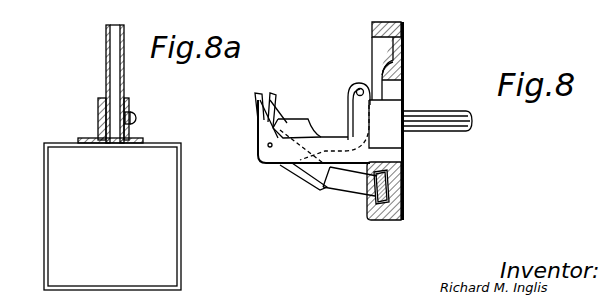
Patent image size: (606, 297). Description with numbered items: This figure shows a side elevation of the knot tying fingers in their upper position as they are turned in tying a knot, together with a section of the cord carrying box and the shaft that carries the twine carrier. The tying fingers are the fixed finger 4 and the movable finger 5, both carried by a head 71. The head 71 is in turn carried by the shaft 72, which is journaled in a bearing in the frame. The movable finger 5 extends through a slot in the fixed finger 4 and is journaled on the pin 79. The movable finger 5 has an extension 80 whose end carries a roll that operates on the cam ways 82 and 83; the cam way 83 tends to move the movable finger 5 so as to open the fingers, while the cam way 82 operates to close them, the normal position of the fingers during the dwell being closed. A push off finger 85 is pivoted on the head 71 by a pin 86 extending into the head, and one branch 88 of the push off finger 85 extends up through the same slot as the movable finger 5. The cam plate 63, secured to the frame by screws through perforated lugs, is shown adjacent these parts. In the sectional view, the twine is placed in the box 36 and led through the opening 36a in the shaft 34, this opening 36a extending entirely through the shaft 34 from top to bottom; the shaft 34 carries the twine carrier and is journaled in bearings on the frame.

In FIG. 8, the fixed finger 4 is at (257, 111).
In FIG. 8, the movable finger 5 is at (275, 105).
In FIG. 8A, the shaft 34 is at (125, 91).
In FIG. 8A, the box 36 is at (112, 216).
In FIG. 8A, the opening 36a is at (113, 70).
In FIG. 8, the cam plate 63 is at (403, 175).
In FIG. 8, the head 71 is at (385, 124).
In FIG. 8, the shaft 72 is at (457, 118).
In FIG. 8, the pin 79 is at (263, 148).
In FIG. 8, the extension 80 is at (353, 180).
In FIG. 8, the cam way 82 is at (372, 23).
In FIG. 8, the cam way 83 is at (402, 61).
In FIG. 8, the push off finger 85 is at (275, 114).
In FIG. 8, the pin 86 is at (360, 86).
In FIG. 8, the branch 88 is at (317, 182).